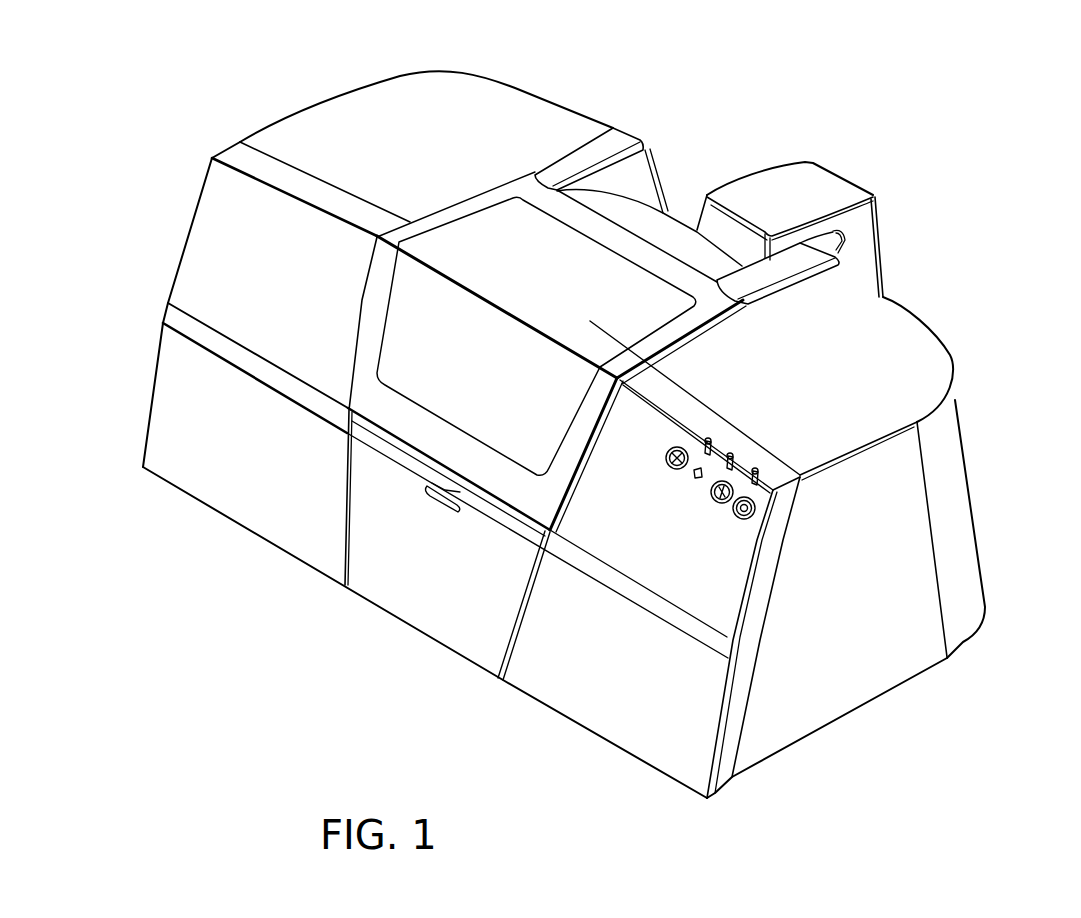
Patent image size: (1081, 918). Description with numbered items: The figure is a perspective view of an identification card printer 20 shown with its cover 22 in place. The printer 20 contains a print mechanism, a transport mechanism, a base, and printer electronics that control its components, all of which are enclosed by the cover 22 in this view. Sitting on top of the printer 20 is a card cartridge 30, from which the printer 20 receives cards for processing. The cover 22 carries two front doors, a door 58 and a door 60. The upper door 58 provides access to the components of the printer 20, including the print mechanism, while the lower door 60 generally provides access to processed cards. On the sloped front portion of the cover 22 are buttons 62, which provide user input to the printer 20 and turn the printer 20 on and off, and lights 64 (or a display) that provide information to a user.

The identification card printer 20 is at (913, 122).
The cover 22 is at (933, 378).
The card cartridge 30 is at (867, 230).
The front door 58 is at (400, 340).
The front door 60 is at (380, 540).
The buttons 62 is at (692, 507).
The lights 64 is at (748, 449).